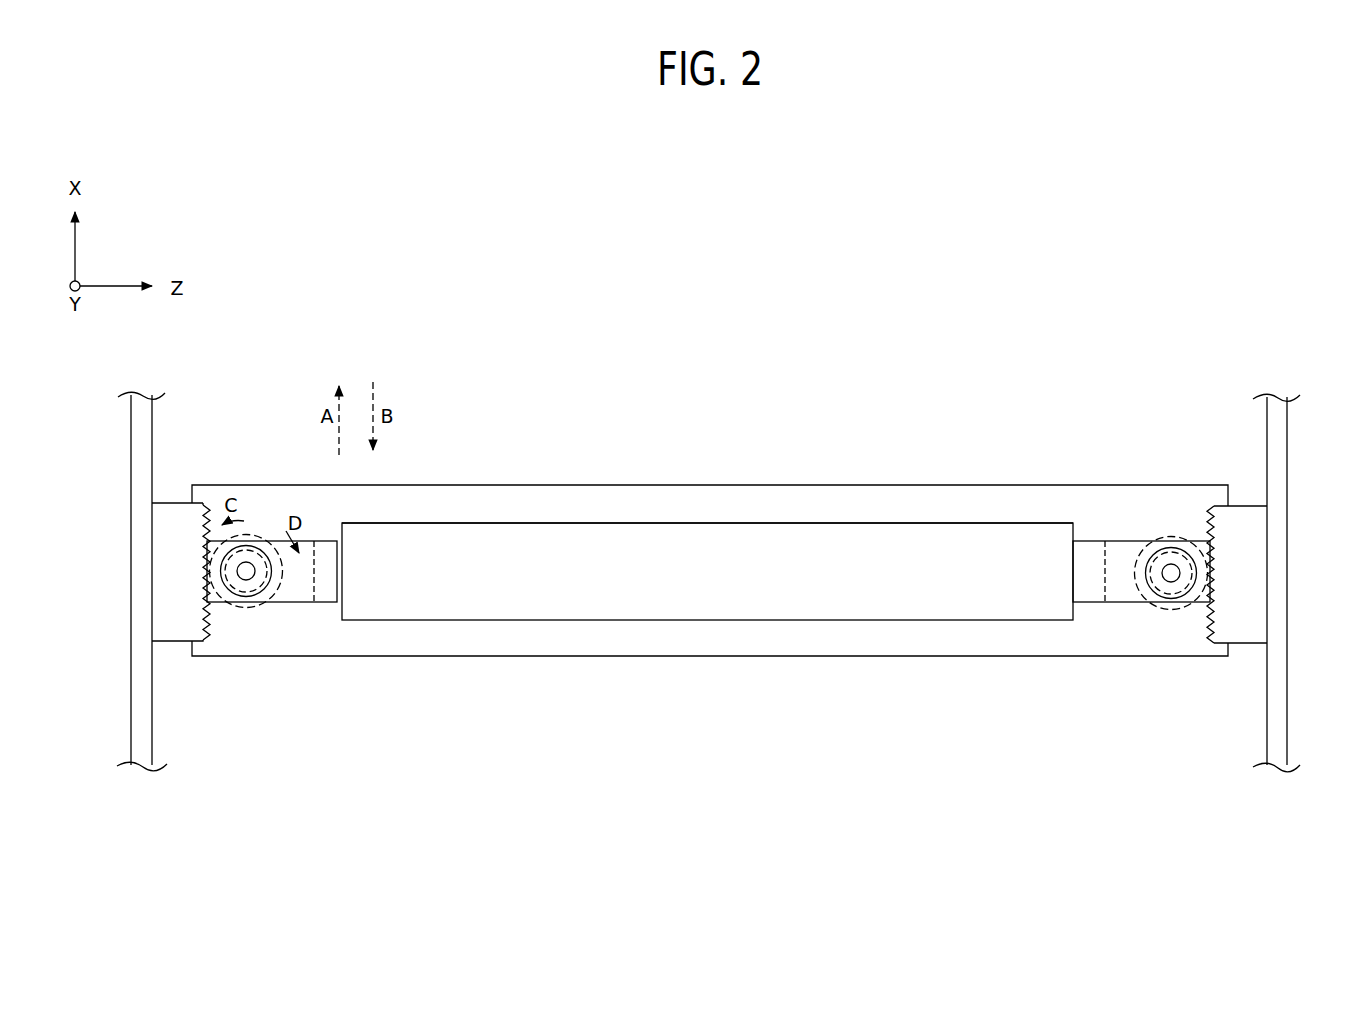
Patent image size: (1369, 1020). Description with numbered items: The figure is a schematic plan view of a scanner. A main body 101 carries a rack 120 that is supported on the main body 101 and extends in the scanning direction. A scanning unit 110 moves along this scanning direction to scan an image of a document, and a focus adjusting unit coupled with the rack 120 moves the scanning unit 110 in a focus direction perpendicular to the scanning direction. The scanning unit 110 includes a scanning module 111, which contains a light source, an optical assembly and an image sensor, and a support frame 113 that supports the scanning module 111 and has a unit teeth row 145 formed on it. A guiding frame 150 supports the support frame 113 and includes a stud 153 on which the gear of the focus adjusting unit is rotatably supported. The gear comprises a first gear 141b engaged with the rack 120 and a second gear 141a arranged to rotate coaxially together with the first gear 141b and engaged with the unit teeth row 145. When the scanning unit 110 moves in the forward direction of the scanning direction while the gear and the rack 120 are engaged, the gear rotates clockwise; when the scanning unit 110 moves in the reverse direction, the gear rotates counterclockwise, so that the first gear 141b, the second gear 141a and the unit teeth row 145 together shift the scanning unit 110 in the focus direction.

The main body 101 is at (131, 512).
The rack 120 is at (160, 559).
The guiding frame 150 is at (570, 488).
The scanning unit 110 is at (850, 508).
The scanning module 111 is at (687, 542).
The support frame 113 is at (302, 588).
The unit teeth row 145 is at (283, 563).
The stud 153 is at (248, 564).
The second gear 141a is at (233, 563).
The first gear 141b is at (244, 600).